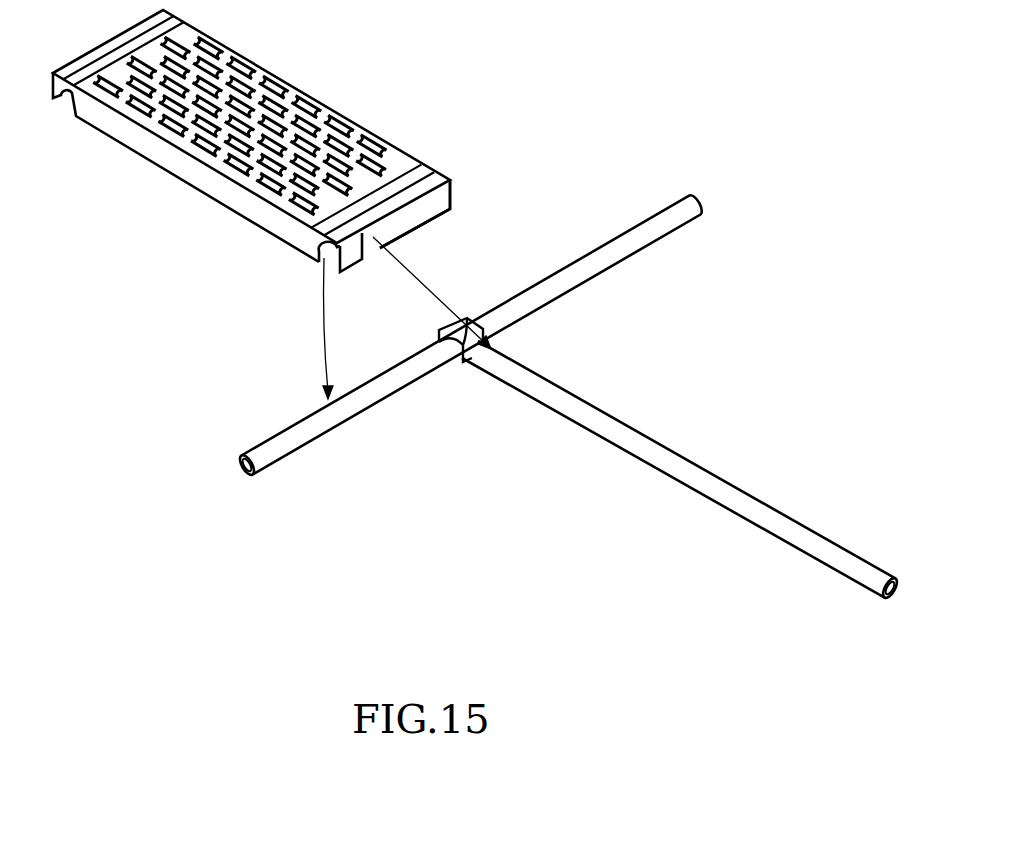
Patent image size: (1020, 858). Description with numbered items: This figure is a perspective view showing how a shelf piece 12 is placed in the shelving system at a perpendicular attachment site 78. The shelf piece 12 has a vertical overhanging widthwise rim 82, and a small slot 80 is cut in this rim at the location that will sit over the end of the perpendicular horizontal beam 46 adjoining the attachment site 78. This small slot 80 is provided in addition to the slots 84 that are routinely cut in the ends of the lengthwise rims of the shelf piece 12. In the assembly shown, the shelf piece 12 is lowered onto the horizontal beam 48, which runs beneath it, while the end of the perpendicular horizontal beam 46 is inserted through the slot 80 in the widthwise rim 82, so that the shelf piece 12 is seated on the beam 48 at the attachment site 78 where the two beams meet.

The shelf piece 12 is at (262, 73).
The vertical overhanging widthwise rim 82 is at (458, 199).
The slots 84 is at (63, 100).
The small slot 80 is at (369, 250).
The perpendicular attachment site 78 is at (457, 352).
The horizontal beam 48 is at (305, 421).
The perpendicular horizontal beam 46 is at (675, 470).